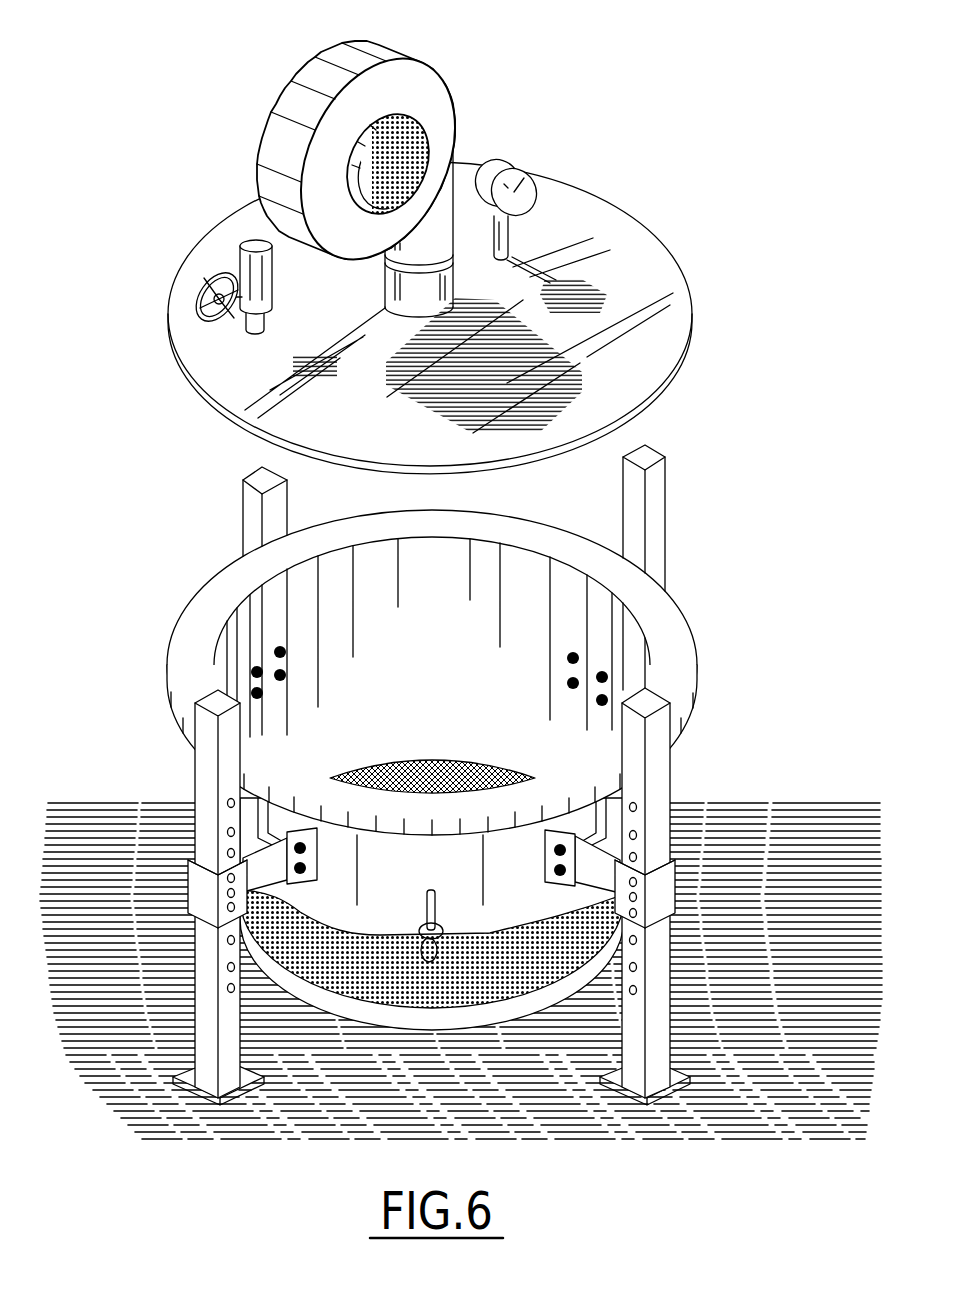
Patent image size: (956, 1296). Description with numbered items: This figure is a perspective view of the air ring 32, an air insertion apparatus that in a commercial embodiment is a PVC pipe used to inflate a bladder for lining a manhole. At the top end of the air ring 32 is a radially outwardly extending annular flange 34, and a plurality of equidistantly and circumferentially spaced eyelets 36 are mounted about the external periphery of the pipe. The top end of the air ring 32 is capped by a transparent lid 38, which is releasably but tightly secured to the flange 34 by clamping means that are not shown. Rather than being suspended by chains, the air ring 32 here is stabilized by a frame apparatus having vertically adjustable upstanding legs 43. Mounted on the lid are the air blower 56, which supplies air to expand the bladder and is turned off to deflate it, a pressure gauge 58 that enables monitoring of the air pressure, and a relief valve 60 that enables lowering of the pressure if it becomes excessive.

The air ring 32 is at (168, 600).
The annular flange 34 is at (667, 613).
The eyelets 36 is at (423, 915).
The transparent lid 38 is at (662, 252).
The vertically adjustable upstanding legs 43 is at (655, 480).
The air blower 56 is at (312, 66).
The pressure gauge 58 is at (508, 150).
The relief valve 60 is at (240, 296).